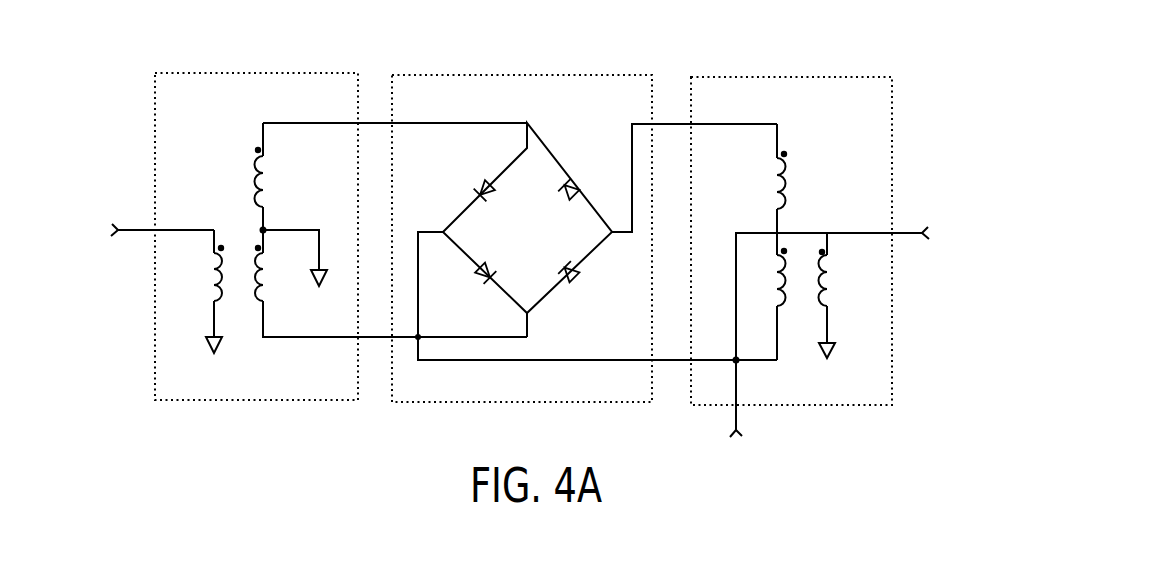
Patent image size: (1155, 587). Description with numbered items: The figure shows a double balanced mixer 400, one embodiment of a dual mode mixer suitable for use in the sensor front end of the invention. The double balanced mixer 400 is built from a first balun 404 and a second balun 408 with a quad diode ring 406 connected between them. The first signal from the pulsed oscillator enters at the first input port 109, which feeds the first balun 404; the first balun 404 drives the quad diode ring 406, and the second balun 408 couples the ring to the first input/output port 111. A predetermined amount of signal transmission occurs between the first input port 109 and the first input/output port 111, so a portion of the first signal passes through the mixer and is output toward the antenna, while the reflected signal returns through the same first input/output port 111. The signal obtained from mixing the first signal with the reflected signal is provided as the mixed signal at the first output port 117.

The double balanced mixer 400 is at (1032, 103).
The first balun 404 is at (192, 85).
The quad diode ring 406 is at (467, 85).
The second balun 408 is at (875, 85).
The first input port 109 is at (117, 226).
The first input/output port 111 is at (924, 229).
The first output port 117 is at (744, 431).